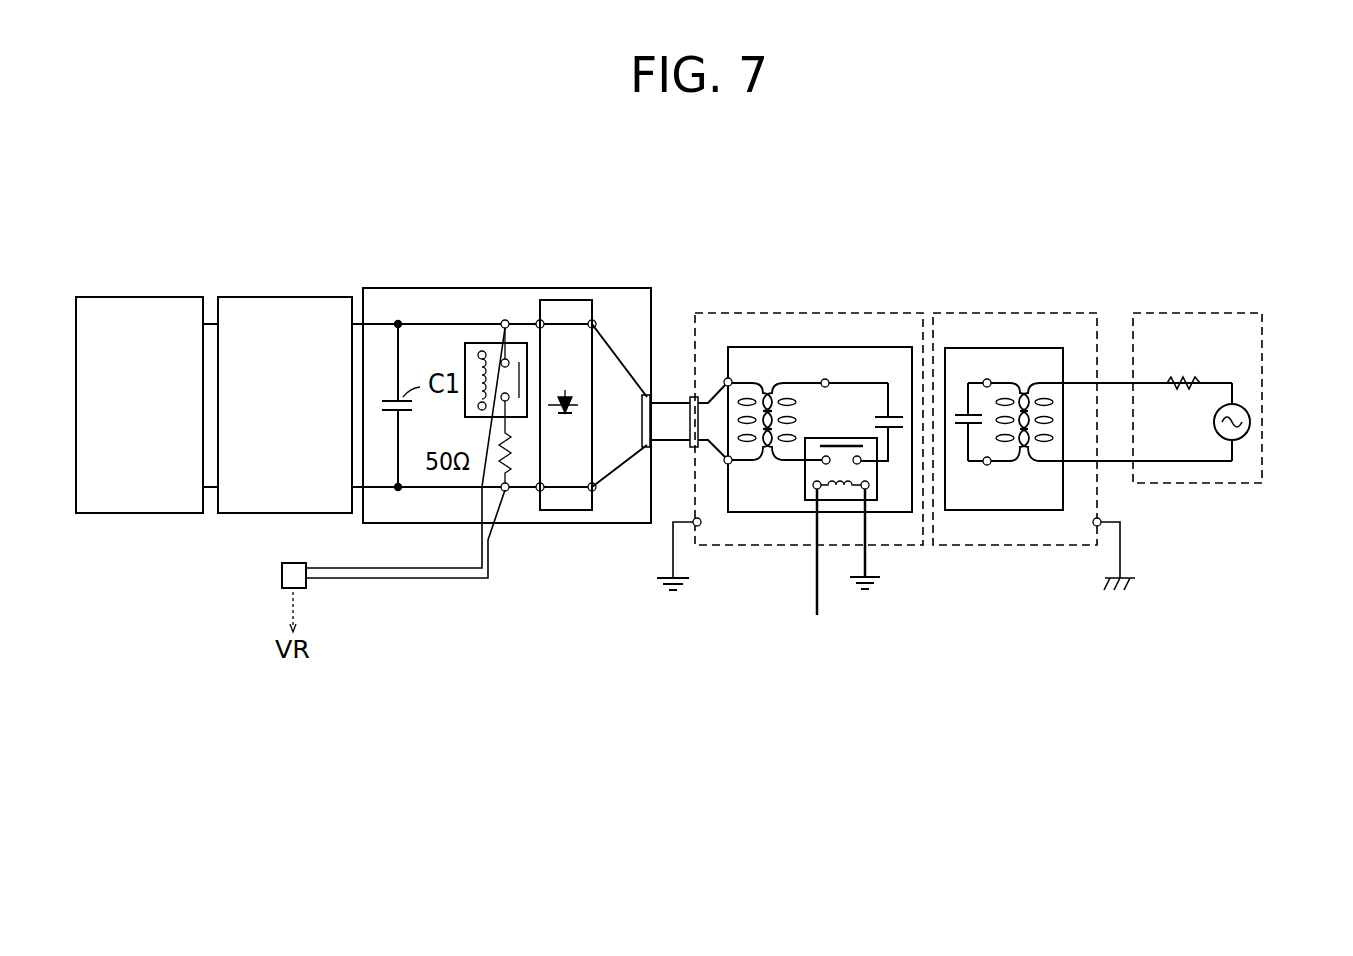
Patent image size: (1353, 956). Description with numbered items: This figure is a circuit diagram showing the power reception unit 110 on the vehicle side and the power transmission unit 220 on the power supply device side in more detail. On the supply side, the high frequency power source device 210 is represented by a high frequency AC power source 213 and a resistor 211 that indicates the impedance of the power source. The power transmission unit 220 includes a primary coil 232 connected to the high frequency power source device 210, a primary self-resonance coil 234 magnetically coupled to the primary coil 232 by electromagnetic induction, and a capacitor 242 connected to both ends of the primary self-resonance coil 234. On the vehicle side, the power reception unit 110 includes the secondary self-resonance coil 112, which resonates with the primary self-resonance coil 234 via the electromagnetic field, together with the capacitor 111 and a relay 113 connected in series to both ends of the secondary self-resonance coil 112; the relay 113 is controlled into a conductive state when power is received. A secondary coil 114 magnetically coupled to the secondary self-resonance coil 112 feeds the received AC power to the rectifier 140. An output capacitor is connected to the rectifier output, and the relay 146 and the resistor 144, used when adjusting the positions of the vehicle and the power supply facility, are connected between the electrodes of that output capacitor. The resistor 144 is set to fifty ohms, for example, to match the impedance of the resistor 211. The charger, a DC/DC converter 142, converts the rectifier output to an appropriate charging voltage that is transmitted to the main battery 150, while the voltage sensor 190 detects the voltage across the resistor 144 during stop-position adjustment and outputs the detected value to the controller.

The main battery 150 is at (143, 297).
The DC/DC converter 142 is at (285, 297).
The rectifier 140 is at (566, 288).
The relay 146 is at (483, 343).
The resistor 144 is at (513, 473).
The voltage sensor 190 is at (282, 575).
The power reception unit 110 is at (882, 313).
The secondary coil 114 is at (742, 347).
The secondary self-resonance coil 112 is at (797, 381).
The capacitor 111 is at (897, 443).
The relay 113 is at (803, 484).
The power transmission unit 220 is at (1057, 313).
The capacitor 242 is at (958, 362).
The primary self-resonance coil 234 is at (1000, 463).
The primary coil 232 is at (1047, 463).
The high frequency power source device 210 is at (1203, 313).
The resistor 211 is at (1183, 376).
The high frequency AC power source 213 is at (1250, 422).